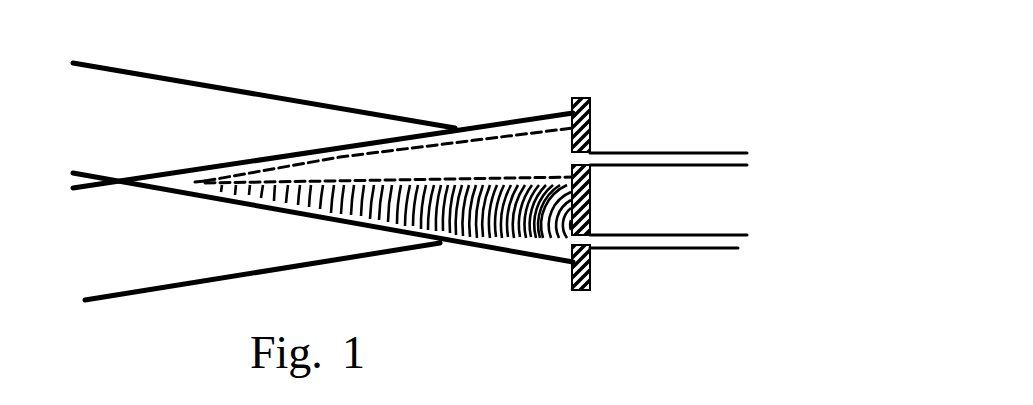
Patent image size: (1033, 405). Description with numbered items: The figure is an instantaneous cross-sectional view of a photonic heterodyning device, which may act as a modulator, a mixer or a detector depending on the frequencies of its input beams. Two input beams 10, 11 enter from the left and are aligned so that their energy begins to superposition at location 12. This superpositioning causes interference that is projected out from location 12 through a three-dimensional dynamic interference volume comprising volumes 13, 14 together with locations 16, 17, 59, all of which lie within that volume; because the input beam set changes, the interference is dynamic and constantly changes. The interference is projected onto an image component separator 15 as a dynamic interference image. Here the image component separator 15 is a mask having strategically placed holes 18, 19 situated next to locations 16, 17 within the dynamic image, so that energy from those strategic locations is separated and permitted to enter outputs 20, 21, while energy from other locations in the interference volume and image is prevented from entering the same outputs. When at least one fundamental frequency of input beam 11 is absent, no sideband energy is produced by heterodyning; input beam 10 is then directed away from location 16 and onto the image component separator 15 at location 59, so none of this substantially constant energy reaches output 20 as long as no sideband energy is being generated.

The input beam 10 is at (199, 136).
The input beam 11 is at (204, 231).
The location 12 is at (197, 183).
The volume 13 is at (433, 168).
The volume 14 is at (396, 253).
The image component separator 15 is at (609, 148).
The location 16 is at (573, 160).
The location 17 is at (567, 243).
The hole 18 is at (581, 156).
The hole 19 is at (589, 243).
The output 20 is at (747, 158).
The output 21 is at (747, 241).
The location 59 is at (587, 194).